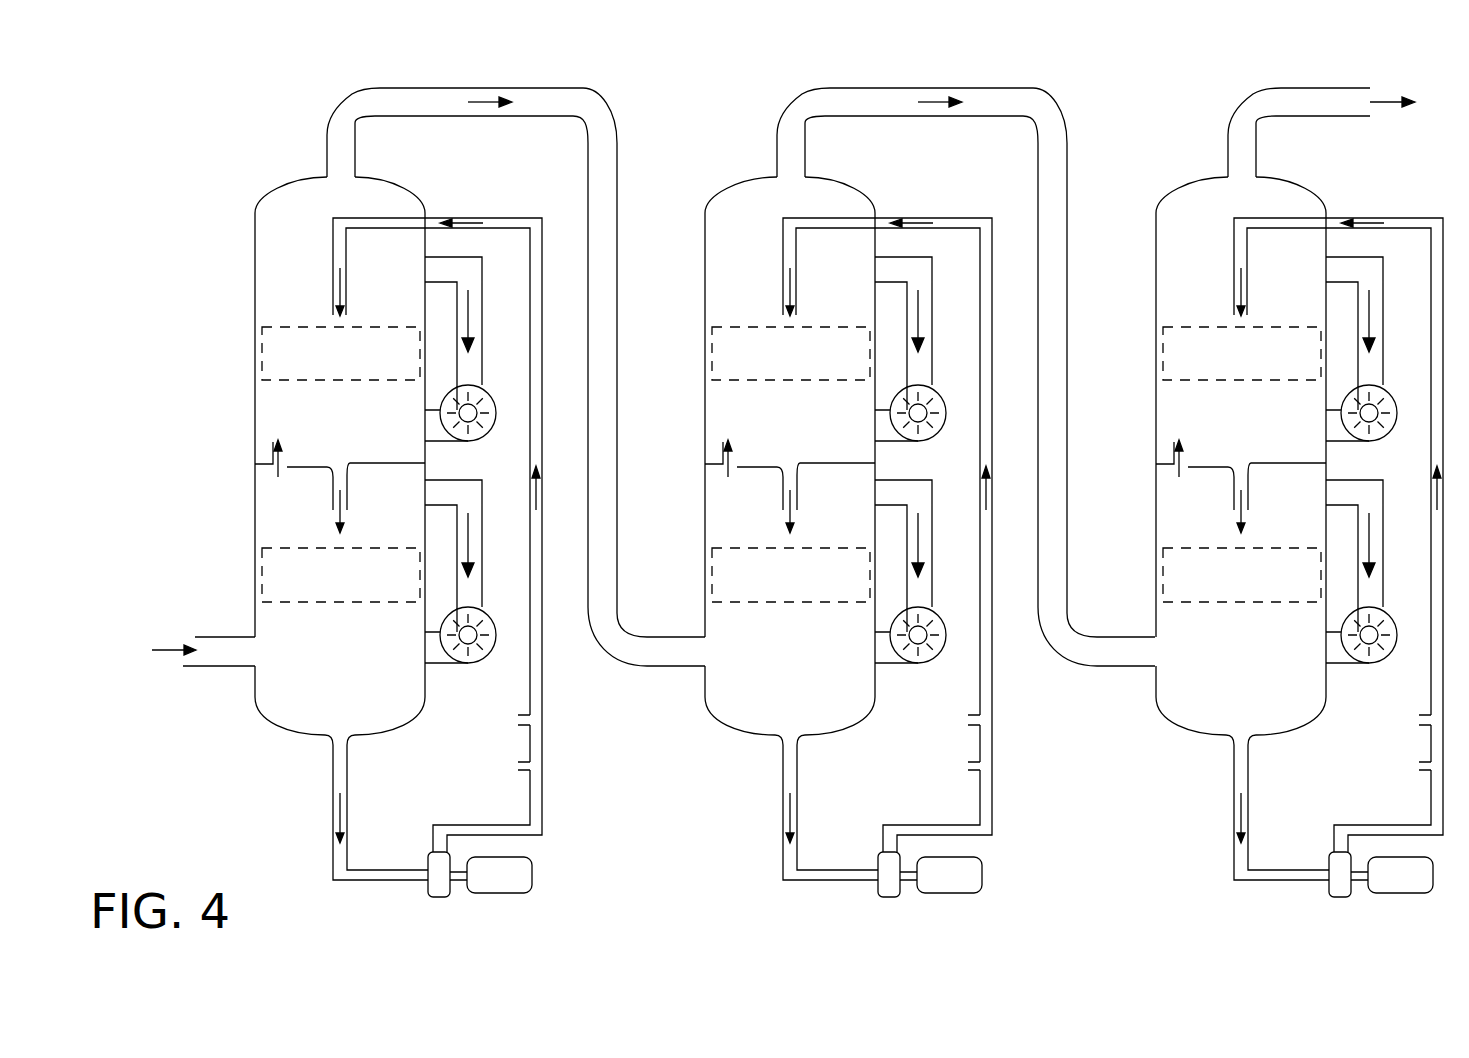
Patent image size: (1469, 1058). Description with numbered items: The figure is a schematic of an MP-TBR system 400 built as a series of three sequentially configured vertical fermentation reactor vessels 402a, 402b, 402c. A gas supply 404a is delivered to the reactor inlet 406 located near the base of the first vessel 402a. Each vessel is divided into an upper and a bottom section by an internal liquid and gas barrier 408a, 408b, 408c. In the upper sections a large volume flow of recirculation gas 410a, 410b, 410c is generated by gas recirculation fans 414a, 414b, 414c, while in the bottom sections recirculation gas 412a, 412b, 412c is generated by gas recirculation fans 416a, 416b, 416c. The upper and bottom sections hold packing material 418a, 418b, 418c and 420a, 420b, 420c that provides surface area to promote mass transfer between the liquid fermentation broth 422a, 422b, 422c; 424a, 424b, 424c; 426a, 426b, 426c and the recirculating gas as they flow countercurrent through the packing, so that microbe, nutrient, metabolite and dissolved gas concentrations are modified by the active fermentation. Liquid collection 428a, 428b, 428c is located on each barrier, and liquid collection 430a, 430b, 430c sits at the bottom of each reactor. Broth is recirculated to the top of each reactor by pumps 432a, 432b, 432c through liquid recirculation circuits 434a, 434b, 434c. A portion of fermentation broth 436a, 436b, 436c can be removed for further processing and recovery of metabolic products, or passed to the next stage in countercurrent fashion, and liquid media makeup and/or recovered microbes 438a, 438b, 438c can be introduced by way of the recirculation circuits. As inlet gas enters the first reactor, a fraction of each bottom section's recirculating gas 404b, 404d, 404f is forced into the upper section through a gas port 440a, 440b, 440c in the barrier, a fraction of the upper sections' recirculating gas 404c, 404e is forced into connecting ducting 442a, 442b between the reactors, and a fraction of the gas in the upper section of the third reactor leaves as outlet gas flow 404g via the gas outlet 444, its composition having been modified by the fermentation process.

The MP-TBR system 400 is at (759, 491).
The fermentation reactor vessel 402a is at (302, 177).
The fermentation reactor vessel 402b is at (762, 417).
The fermentation reactor vessel 402c is at (1213, 417).
The gas supply 404a is at (167, 648).
The recirculating gas fraction 404b is at (278, 440).
The recirculating gas fraction 404c is at (488, 104).
The recirculating gas fraction 404d is at (677, 438).
The recirculating gas fraction 404e is at (903, 127).
The recirculating gas fraction 404f is at (1128, 438).
The outlet gas flow 404g is at (1355, 127).
The reactor inlet 406 is at (223, 637).
The internal liquid and gas barrier 408a is at (380, 463).
The internal liquid and gas barrier 408b is at (806, 456).
The internal liquid and gas barrier 408c is at (1257, 456).
The recirculation gas 410a is at (470, 333).
The recirculation gas 410b is at (867, 333).
The recirculation gas 410c is at (1318, 333).
The recirculation gas 412a is at (470, 540).
The recirculation gas 412b is at (867, 556).
The recirculation gas 412c is at (1318, 556).
The gas recirculation fan 414a is at (457, 422).
The gas recirculation fan 414b is at (874, 415).
The gas recirculation fan 414c is at (1325, 415).
The gas recirculation fan 416a is at (457, 644).
The gas recirculation fan 416b is at (874, 638).
The gas recirculation fan 416c is at (1325, 638).
The packing material 418a is at (362, 380).
The packing material 418b is at (791, 353).
The packing material 418c is at (1242, 353).
The packing material 420a is at (362, 600).
The packing material 420b is at (791, 575).
The packing material 420c is at (1242, 575).
The liquid fermentation broth 422a is at (340, 307).
The liquid fermentation broth 422b is at (753, 292).
The liquid fermentation broth 422c is at (1204, 292).
The liquid fermentation broth 424a is at (340, 525).
The liquid fermentation broth 424b is at (753, 511).
The liquid fermentation broth 424c is at (1204, 511).
The liquid fermentation broth 426a is at (333, 813).
The liquid fermentation broth 426b is at (786, 812).
The liquid fermentation broth 426c is at (1237, 812).
The liquid collection 428a is at (348, 473).
The liquid collection 428b is at (836, 491).
The liquid collection 428c is at (1285, 491).
The liquid collection 430a is at (332, 737).
The liquid collection 430b is at (787, 733).
The liquid collection 430c is at (1238, 733).
The pump 432a is at (500, 895).
The pump 432b is at (923, 892).
The pump 432c is at (1374, 892).
The liquid recirculation circuit 434a is at (518, 217).
The liquid recirculation circuit 434b is at (887, 513).
The liquid recirculation circuit 434c is at (1338, 513).
The portion of fermentation broth 436a is at (493, 718).
The portion of fermentation broth 436b is at (925, 737).
The portion of fermentation broth 436c is at (1376, 737).
The liquid media makeup and/or recovered microbes 438a is at (508, 763).
The liquid media makeup and/or recovered microbes 438b is at (930, 783).
The liquid media makeup and/or recovered microbes 438c is at (1381, 783).
The gas port 440a is at (273, 460).
The gas port 440b is at (671, 447).
The gas port 440c is at (1122, 447).
The connecting ducting 442a is at (585, 89).
The connecting ducting 442b is at (966, 357).
The gas outlet 444 is at (1299, 113).